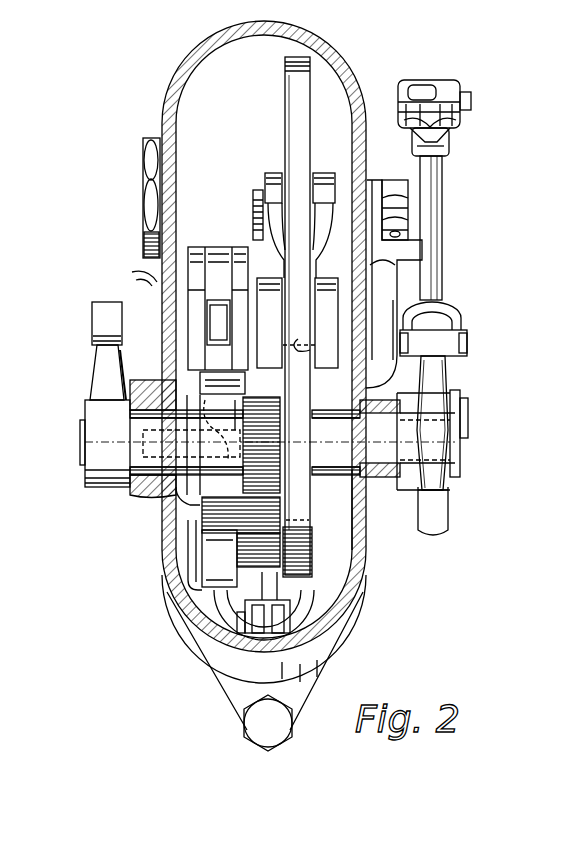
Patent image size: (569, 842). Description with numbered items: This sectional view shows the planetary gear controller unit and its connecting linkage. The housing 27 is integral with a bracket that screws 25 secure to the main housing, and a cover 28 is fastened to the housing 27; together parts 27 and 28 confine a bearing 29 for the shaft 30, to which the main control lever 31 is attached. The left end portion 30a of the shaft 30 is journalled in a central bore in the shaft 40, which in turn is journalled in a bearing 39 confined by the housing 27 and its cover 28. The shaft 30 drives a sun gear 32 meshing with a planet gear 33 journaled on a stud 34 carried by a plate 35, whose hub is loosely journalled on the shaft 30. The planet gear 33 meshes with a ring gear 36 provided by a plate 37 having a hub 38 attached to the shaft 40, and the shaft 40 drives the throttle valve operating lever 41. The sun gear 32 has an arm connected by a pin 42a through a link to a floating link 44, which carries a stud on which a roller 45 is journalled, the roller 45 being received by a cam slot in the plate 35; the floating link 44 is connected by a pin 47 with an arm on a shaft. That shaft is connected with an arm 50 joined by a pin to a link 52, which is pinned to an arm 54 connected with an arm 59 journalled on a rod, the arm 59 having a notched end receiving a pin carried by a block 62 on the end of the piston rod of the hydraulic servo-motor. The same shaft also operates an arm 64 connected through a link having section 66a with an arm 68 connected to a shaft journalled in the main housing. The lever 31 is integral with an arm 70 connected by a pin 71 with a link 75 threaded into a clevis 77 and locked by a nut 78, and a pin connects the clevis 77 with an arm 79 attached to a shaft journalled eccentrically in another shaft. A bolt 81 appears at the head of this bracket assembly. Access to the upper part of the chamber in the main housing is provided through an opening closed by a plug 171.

The screws 25 is at (272, 728).
The housing 27 is at (366, 531).
The cover 28 is at (172, 79).
The bearing 29 is at (353, 506).
The shaft 30 is at (380, 441).
The left end portion of shaft 30a is at (165, 497).
The main control lever 31 is at (441, 520).
The sun gear 32 is at (281, 441).
The planet gear 33 is at (233, 502).
The stud 34 is at (292, 520).
The plate 35 is at (285, 88).
The ring gear 36 is at (202, 560).
The plate 37 is at (188, 530).
The hub 38 is at (225, 392).
The bearing 39 is at (142, 487).
The shaft 40 is at (80, 436).
The throttle valve operating lever 41 is at (97, 362).
The pin 42a is at (302, 323).
The floating link 44 is at (274, 173).
The roller 45 is at (312, 350).
The pin 47 is at (258, 190).
The arm 50 is at (222, 248).
The link 52 is at (199, 248).
The arm 54 is at (224, 432).
The arm 59 is at (278, 601).
The block 62 is at (300, 612).
The arm 64 is at (412, 294).
The link section 66a is at (458, 392).
The arm 68 is at (400, 256).
The arm 70 is at (440, 371).
The pin 71 is at (467, 342).
The link 75 is at (435, 274).
The clevis 77 is at (455, 119).
The nut 78 is at (446, 147).
The arm 79 is at (437, 84).
The bolt 81 is at (471, 100).
The plug 171 is at (146, 151).